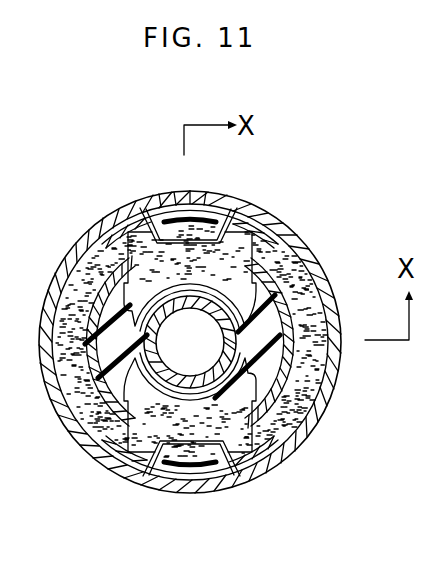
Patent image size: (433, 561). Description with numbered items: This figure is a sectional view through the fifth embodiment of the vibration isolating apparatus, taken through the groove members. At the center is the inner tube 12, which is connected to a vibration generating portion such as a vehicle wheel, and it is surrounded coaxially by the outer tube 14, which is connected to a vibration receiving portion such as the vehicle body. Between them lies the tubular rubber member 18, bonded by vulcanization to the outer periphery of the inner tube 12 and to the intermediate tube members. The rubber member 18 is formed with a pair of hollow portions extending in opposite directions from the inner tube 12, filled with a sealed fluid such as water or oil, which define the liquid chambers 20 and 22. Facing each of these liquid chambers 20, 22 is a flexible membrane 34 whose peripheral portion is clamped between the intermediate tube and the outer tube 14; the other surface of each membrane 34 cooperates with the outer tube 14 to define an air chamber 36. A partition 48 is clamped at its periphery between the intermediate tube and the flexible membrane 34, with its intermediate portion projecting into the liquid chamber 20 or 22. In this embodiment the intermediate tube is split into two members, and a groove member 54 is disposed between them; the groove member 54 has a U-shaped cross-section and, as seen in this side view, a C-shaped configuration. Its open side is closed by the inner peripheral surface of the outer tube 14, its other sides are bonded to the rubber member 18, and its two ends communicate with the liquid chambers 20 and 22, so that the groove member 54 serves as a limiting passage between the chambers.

The inner tube 12 is at (158, 313).
The outer tube 14 is at (305, 429).
The tubular rubber member 18 is at (316, 278).
The liquid chamber 20 is at (181, 274).
The liquid chamber 22 is at (243, 425).
The flexible membrane 34 is at (220, 198).
The air chamber 36 is at (157, 210).
The partition 48 is at (218, 242).
The groove member 54 is at (290, 380).